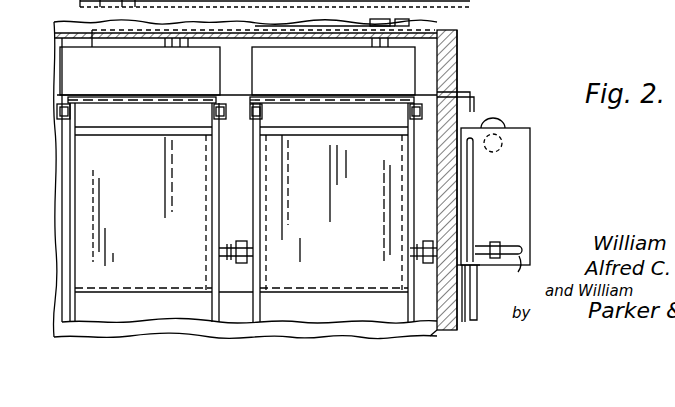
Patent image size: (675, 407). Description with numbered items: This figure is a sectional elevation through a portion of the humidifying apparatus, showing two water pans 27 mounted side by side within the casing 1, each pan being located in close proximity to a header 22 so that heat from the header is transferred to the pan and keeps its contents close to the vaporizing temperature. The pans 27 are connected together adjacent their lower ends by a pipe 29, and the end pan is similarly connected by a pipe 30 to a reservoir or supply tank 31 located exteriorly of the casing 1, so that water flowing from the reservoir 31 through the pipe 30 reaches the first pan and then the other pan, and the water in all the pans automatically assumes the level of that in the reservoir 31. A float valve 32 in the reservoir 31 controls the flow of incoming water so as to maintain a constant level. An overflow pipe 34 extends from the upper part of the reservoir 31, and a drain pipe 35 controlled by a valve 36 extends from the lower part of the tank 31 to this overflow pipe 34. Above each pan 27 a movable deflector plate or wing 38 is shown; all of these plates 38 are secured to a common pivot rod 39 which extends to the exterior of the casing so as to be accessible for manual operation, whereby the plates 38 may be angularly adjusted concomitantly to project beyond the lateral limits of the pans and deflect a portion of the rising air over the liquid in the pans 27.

The casing 1 is at (458, 55).
The header 22 is at (281, 302).
The water pan 27 is at (242, 212).
The pipe 29 is at (228, 248).
The pipe 30 is at (432, 266).
The reservoir or supply tank 31 is at (531, 223).
The float valve 32 is at (503, 121).
The overflow pipe 34 is at (475, 185).
The drain pipe 35 is at (516, 262).
The valve 36 is at (496, 248).
The movable deflector plate 38 is at (239, 112).
The pivot rod 39 is at (239, 93).